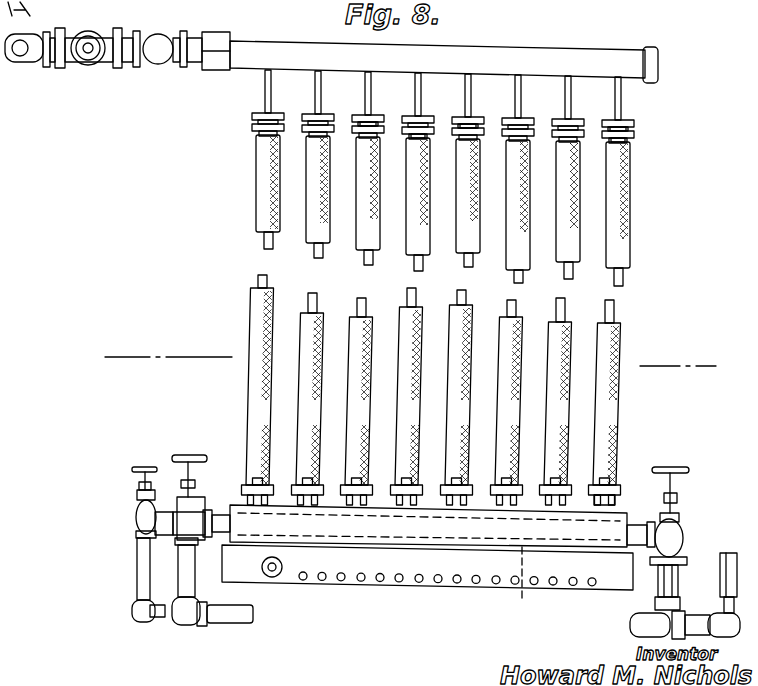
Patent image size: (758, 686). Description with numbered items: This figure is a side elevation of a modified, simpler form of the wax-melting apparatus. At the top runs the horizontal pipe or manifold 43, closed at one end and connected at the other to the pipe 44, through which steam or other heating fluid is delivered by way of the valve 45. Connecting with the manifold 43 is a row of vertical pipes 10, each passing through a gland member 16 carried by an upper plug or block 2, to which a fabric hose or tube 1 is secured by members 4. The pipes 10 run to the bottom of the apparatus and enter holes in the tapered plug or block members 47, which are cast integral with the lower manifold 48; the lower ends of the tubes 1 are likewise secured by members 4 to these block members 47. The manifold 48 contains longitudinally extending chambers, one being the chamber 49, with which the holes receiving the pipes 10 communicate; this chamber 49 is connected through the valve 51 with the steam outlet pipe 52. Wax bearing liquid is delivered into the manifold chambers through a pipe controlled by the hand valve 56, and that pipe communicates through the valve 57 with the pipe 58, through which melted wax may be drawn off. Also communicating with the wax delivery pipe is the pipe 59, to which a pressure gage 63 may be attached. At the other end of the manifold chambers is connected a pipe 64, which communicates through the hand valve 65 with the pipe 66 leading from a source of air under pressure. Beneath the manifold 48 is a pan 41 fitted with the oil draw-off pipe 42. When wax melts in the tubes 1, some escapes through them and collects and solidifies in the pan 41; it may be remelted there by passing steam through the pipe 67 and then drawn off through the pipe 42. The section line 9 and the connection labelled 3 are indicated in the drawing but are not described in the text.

The fabric tubes 1 is at (256, 200).
The upper plugs or blocks 2 is at (251, 122).
The lower tube fitting 3 is at (612, 487).
The securing members 4 is at (428, 132).
The section line 9 is at (409, 361).
The vertical pipes 10 is at (265, 97).
The gland members 16 is at (376, 122).
The pan 41 is at (460, 592).
The oil draw-off pipe 42 is at (276, 578).
The horizontal pipes or manifolds 43 is at (281, 51).
The pipe 44 is at (162, 60).
The valve 45 is at (88, 56).
The tapered plug or block members 47 is at (612, 505).
The manifold 48 is at (428, 526).
The longitudinally extending chamber 49 is at (520, 590).
The valve 51 is at (192, 508).
The steam outlet pipe 52 is at (218, 623).
The hand valve 56 is at (675, 525).
The valve 57 is at (655, 606).
The pipe 58 is at (640, 615).
The pipe 59 is at (688, 611).
The pressure gage 63 is at (728, 553).
The pipe 64 is at (168, 512).
The hand valve 65 is at (140, 520).
The pipe 66 is at (158, 620).
The steam pipe 67 is at (363, 600).